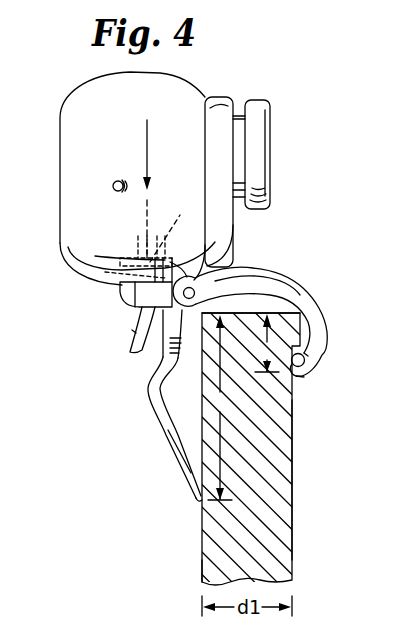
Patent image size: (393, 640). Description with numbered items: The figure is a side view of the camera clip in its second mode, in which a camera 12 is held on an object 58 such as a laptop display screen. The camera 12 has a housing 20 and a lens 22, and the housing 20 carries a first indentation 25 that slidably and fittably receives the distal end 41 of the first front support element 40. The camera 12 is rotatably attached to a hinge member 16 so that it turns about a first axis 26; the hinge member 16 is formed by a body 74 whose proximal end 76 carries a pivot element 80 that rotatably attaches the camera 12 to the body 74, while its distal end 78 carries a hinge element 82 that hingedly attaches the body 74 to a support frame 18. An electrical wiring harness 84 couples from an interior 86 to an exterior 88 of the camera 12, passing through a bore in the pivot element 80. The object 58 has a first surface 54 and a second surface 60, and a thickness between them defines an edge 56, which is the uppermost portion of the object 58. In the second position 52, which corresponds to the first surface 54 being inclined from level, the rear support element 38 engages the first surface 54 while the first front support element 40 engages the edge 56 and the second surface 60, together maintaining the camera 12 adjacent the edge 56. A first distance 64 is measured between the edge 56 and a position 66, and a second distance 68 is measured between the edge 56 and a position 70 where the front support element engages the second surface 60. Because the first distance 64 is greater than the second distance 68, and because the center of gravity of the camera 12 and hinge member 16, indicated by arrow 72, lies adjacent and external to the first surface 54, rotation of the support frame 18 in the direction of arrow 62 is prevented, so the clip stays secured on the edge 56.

The camera 12 is at (194, 77).
The housing 20 is at (60, 120).
The lens 22 is at (268, 132).
The first indentation 25 is at (108, 183).
The arrow 72 is at (148, 158).
The first axis 26 is at (181, 216).
The interior 86 is at (88, 212).
The pivot element 80 is at (72, 253).
The proximal end 76 is at (125, 287).
The hinge member 16 is at (105, 312).
The body 74 is at (113, 300).
The hinge element 82 is at (207, 273).
The support frame 18 is at (326, 290).
The first front support element 40 is at (340, 327).
The distal end 41 is at (308, 378).
The position 70 is at (293, 380).
The edge 56 is at (272, 311).
The second position 52 is at (290, 220).
The electrical wiring harness 84 is at (132, 347).
The exterior 88 is at (132, 330).
The distal end 78 is at (165, 347).
The rear support element 38 is at (160, 457).
The position 66 is at (199, 500).
The arrow 62 is at (72, 337).
The object 58 is at (312, 497).
The second surface 60 is at (293, 535).
The first surface 54 is at (203, 565).
The first distance 64 is at (220, 407).
The second distance 68 is at (267, 343).